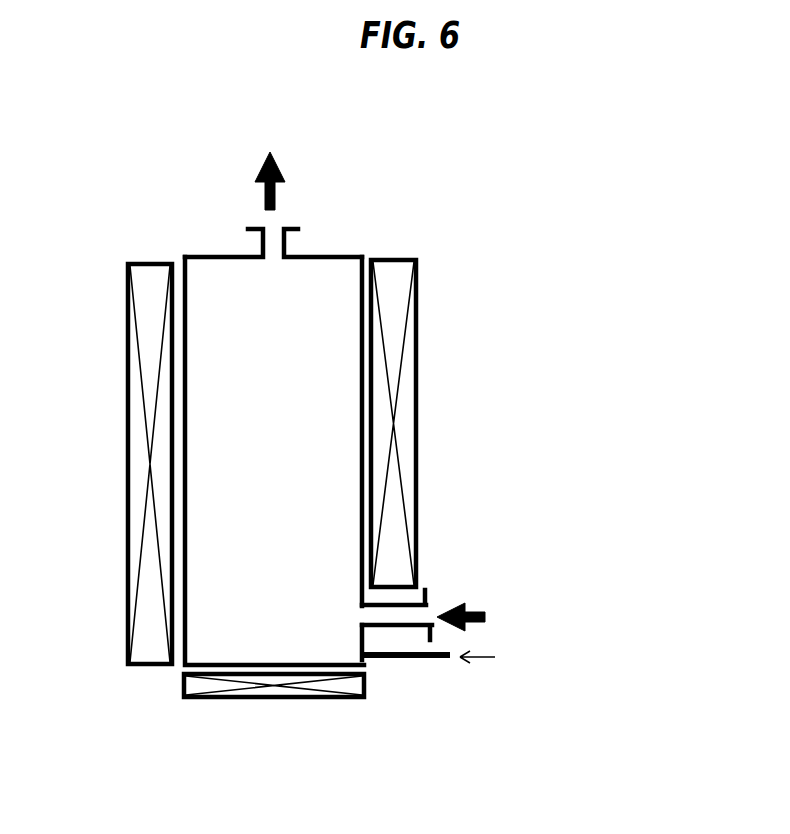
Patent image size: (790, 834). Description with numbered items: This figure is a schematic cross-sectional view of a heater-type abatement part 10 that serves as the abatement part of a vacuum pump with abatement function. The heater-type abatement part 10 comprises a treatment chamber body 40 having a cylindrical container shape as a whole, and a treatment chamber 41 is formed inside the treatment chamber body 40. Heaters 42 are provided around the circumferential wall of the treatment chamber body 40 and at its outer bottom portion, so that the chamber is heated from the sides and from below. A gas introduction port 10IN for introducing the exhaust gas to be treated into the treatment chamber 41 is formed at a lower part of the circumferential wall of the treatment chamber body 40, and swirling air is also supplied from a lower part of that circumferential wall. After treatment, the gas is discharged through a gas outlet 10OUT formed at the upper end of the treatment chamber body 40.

The heater-type abatement part 10 is at (358, 434).
The gas outlet 10OUT is at (278, 228).
The gas introduction port 10IN is at (428, 615).
The treatment chamber body 40 is at (365, 457).
The treatment chamber 41 is at (322, 262).
The heaters 42 is at (127, 357).